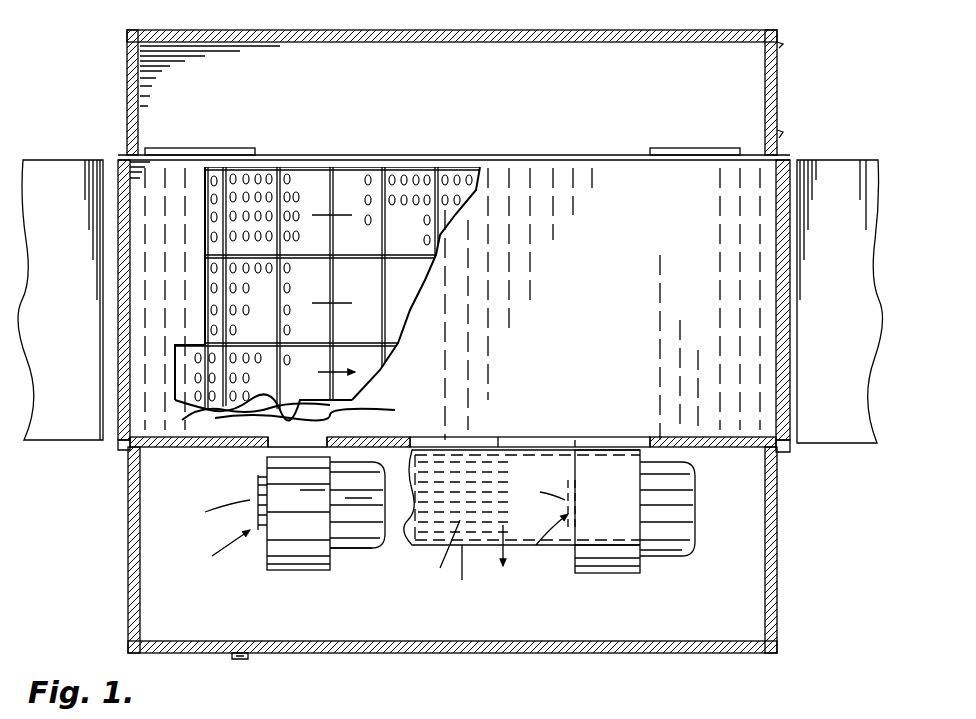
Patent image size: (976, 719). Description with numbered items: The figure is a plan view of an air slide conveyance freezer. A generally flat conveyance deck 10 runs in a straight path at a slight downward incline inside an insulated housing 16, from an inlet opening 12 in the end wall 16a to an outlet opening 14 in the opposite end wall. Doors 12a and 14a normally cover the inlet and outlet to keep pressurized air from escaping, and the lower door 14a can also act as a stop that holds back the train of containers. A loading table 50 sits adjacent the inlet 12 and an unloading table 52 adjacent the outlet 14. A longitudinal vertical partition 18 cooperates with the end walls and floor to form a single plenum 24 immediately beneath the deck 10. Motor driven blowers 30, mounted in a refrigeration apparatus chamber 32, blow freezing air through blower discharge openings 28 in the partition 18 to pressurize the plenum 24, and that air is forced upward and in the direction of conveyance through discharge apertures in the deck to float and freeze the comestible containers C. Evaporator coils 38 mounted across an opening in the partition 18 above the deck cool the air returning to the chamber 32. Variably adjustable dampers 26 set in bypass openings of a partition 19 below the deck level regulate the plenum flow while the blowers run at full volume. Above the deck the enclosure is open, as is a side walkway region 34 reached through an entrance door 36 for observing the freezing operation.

The conveyance deck 10 is at (621, 194).
The inlet opening 12 is at (135, 172).
The door 12a is at (118, 442).
The outlet opening 14 is at (770, 182).
The door 14a is at (790, 452).
The insulated housing 16 is at (777, 640).
The end wall 16a is at (128, 545).
The partition 18 is at (548, 437).
The partition 19 is at (548, 153).
The plenum 24 is at (300, 425).
The dampers 26 is at (218, 148).
The blower discharge openings 28 is at (340, 420).
The motor driven blowers 30 is at (345, 556).
The refrigeration apparatus chamber 32 is at (518, 603).
The side walkway region 34 is at (470, 60).
The entrance door 36 is at (778, 90).
The evaporator coils 38 is at (522, 514).
The loading table 50 is at (84, 180).
The unloading table 52 is at (840, 176).
The comestible containers C is at (291, 168).